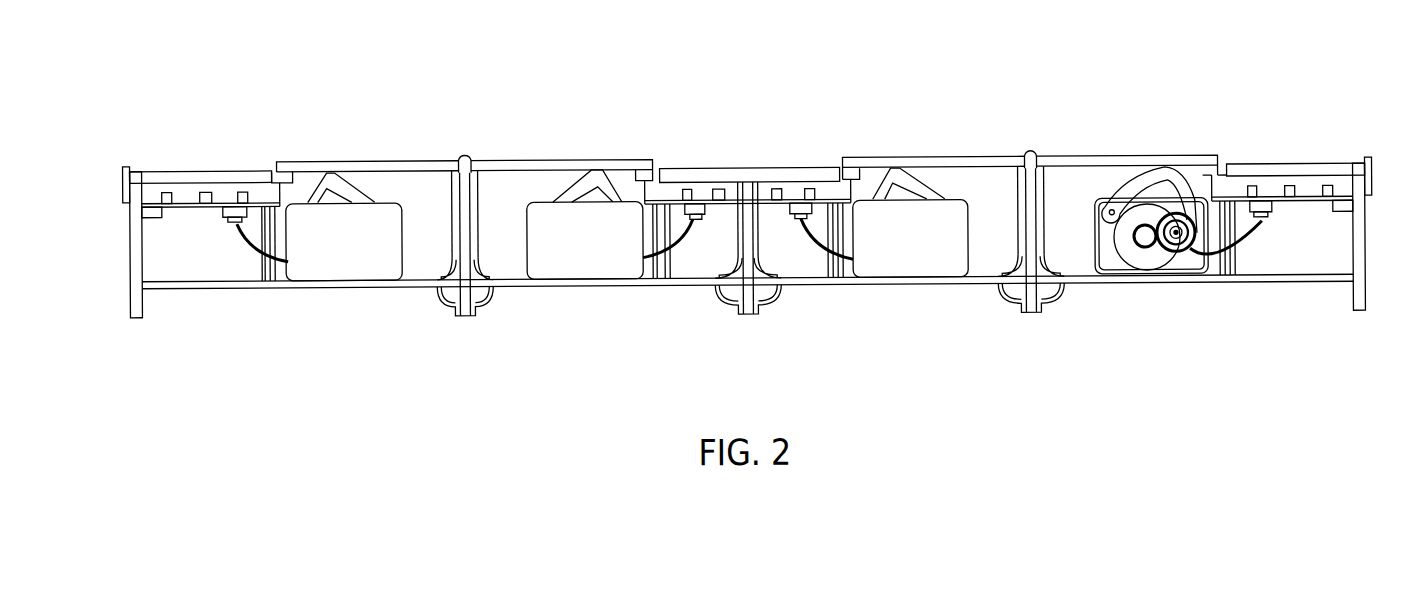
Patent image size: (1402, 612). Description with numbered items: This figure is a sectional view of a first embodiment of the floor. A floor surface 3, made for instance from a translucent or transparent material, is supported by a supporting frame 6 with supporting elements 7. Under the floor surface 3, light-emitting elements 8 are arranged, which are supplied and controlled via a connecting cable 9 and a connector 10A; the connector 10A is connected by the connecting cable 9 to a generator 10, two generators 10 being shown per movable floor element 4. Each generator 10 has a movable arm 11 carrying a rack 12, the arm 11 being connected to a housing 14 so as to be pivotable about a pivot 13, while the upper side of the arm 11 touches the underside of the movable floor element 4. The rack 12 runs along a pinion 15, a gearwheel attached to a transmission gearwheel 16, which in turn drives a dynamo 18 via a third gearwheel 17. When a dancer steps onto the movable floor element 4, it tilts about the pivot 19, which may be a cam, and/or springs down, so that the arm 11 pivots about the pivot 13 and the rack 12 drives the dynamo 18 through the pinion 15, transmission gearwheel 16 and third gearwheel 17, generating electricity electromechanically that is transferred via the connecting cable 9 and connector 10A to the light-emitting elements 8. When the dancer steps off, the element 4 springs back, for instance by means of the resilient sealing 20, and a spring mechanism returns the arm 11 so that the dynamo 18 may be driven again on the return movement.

The floor surface 3 is at (212, 167).
The movable floor element 4 is at (358, 159).
The supporting frame 6 is at (267, 265).
The supporting elements 7 is at (776, 274).
The light-emitting elements 8 is at (204, 189).
The connecting cable 9 is at (249, 240).
The generator 10 is at (367, 258).
The connector 10A is at (234, 204).
The movable arm 11 is at (1178, 181).
The rack 12 is at (1193, 243).
The pivot 13 is at (1110, 210).
The housing 14 is at (1094, 254).
The pinion 15 is at (1181, 245).
The transmission gearwheel 16 is at (1171, 256).
The third gearwheel 17 is at (1145, 227).
The dynamo 18 is at (1147, 260).
The pivot 19 is at (1023, 158).
The resilient sealing 20 is at (1221, 168).